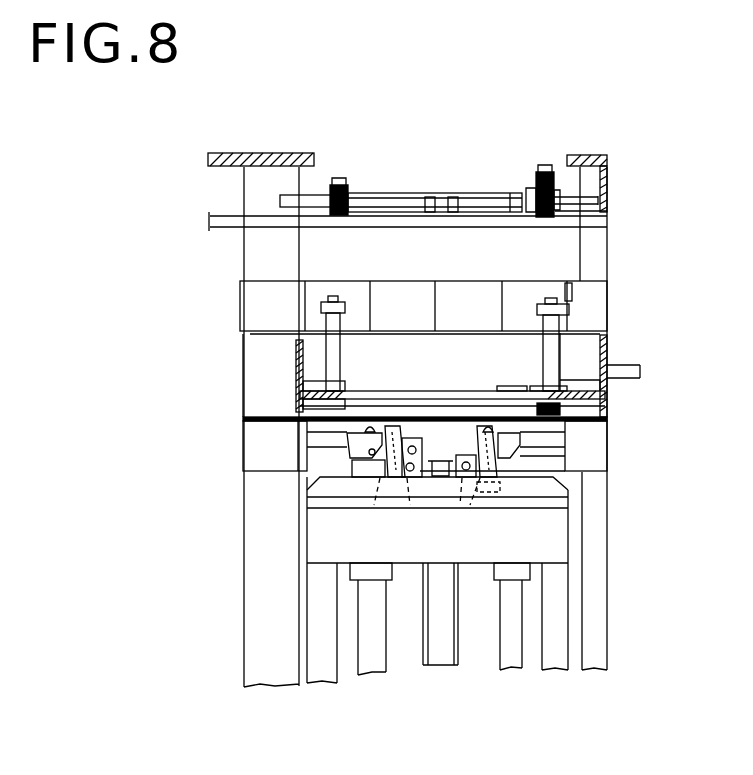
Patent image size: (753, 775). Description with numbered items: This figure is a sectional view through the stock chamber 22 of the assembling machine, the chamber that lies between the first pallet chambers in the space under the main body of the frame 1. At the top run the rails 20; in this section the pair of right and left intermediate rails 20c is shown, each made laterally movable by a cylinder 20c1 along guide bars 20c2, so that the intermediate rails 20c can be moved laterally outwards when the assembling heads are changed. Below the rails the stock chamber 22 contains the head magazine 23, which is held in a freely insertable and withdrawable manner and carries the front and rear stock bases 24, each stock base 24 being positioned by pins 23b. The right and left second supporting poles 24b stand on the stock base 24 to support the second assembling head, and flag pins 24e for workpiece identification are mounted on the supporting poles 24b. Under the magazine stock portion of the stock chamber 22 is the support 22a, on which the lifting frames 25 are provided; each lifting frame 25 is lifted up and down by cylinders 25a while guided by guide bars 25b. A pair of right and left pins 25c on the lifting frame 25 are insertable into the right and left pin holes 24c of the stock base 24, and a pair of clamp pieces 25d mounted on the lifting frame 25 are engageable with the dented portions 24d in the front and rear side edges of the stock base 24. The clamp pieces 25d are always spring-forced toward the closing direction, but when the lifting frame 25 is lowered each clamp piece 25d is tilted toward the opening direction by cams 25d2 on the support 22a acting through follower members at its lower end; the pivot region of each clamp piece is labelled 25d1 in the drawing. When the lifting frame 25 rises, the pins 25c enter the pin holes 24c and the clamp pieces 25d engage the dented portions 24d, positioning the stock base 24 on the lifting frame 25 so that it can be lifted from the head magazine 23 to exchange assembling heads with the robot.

The frame 1 is at (603, 226).
The rails 20 is at (439, 166).
The intermediate rails 20c is at (342, 186).
The cylinder 20c1 is at (455, 197).
The guide bars 20c2 is at (478, 193).
The stock chamber 22 is at (422, 262).
The support 22a is at (565, 548).
The head magazine 23 is at (604, 345).
The pins 23b is at (292, 392).
The stock base 24 is at (606, 394).
The second supporting poles 24b is at (332, 296).
The pin holes 24c is at (345, 388).
The dented portions 24d is at (480, 423).
The flag pins 24e is at (575, 288).
The lifting frame 25 is at (530, 440).
The cylinders 25a is at (440, 655).
The guide bars 25b is at (375, 663).
The pins 25c is at (350, 430).
The clamp pieces 25d is at (412, 425).
The pivot 25d1 is at (385, 480).
The cams 25d2 is at (375, 425).